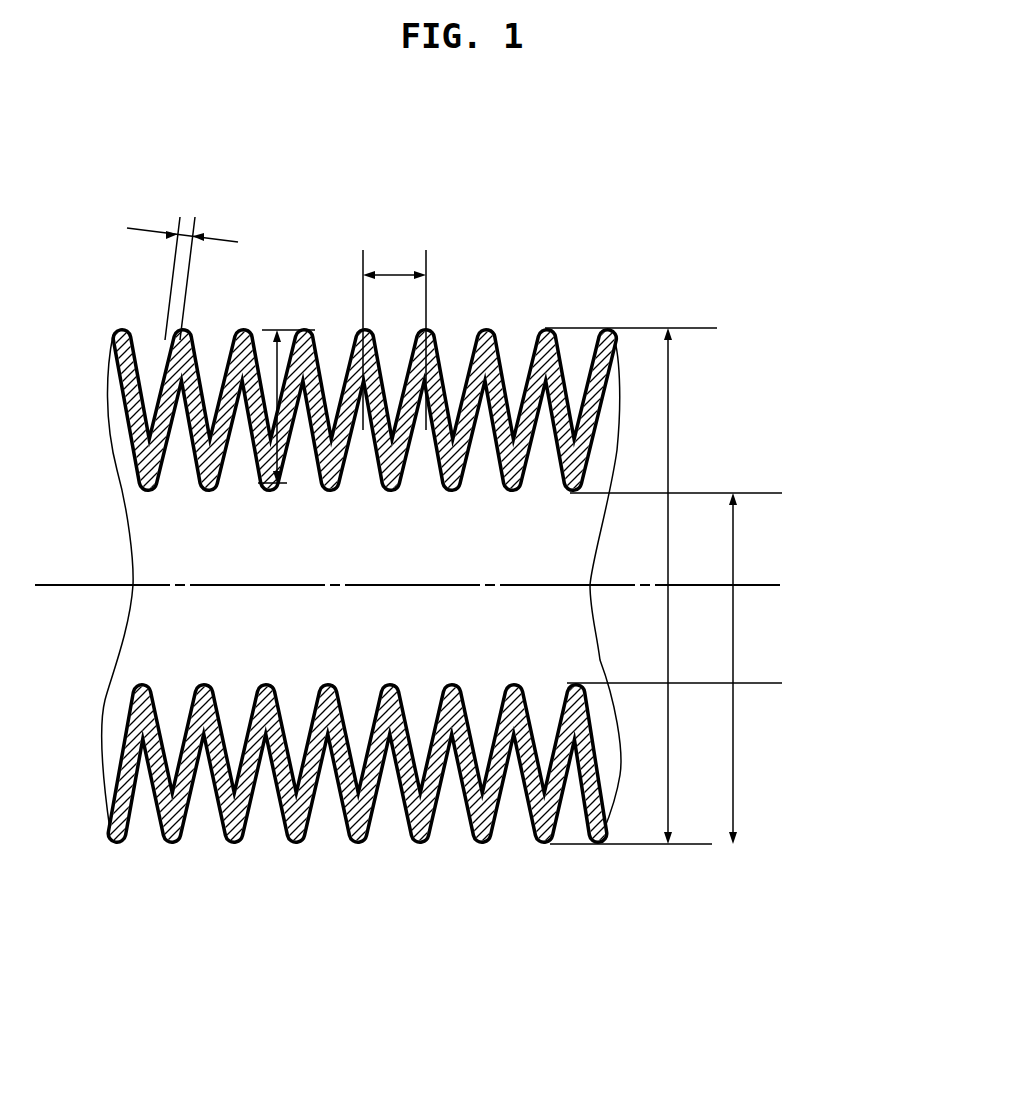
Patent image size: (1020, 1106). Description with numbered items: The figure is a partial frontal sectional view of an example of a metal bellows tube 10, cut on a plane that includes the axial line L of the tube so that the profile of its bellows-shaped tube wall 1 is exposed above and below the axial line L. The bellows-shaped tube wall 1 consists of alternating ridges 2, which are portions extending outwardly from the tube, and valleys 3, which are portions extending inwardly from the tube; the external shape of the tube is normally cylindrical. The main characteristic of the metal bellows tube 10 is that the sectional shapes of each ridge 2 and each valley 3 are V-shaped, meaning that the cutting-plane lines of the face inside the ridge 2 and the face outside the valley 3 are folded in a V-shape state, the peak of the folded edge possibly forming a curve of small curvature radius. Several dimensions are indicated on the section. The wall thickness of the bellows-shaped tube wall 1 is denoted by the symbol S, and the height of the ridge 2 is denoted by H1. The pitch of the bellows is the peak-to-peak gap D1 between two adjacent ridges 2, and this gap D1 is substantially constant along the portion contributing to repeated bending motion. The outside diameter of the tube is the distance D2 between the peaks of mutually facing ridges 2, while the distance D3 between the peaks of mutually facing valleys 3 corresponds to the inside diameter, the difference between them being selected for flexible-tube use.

The metal bellows tube 10 is at (437, 572).
The bellows-shaped tube wall 1 is at (362, 572).
The ridge 2 is at (358, 318).
The valley 3 is at (522, 670).
The wall thickness S is at (182, 260).
The peak-to-peak gap D1 is at (393, 273).
The outside diameter D2 is at (668, 400).
The distance between the peaks of mutually facing valleys D3 is at (733, 633).
The height of the ridge H1 is at (260, 330).
The axial line L is at (758, 586).